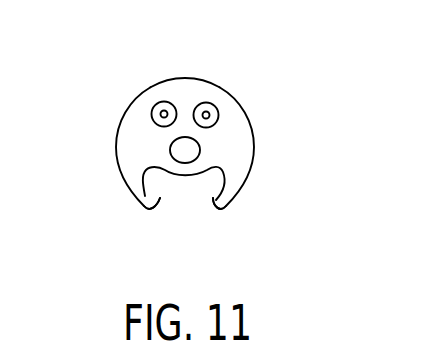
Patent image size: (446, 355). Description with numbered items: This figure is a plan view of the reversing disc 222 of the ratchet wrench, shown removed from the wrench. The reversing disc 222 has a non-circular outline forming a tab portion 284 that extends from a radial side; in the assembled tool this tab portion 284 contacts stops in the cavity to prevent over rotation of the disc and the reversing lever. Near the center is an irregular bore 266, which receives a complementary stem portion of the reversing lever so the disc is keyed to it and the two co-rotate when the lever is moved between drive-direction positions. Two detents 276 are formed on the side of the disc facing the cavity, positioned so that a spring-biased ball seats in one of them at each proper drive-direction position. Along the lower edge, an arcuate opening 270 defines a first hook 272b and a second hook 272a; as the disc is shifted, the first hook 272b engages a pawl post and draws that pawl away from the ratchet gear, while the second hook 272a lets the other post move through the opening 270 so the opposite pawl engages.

The reversing disc 222 is at (242, 110).
The tab portion 284 is at (188, 77).
The detents 276 is at (196, 106).
The irregular bore 266 is at (183, 149).
The arcuate opening 270 is at (193, 189).
The second hook 272a is at (234, 198).
The first hook 272b is at (145, 198).